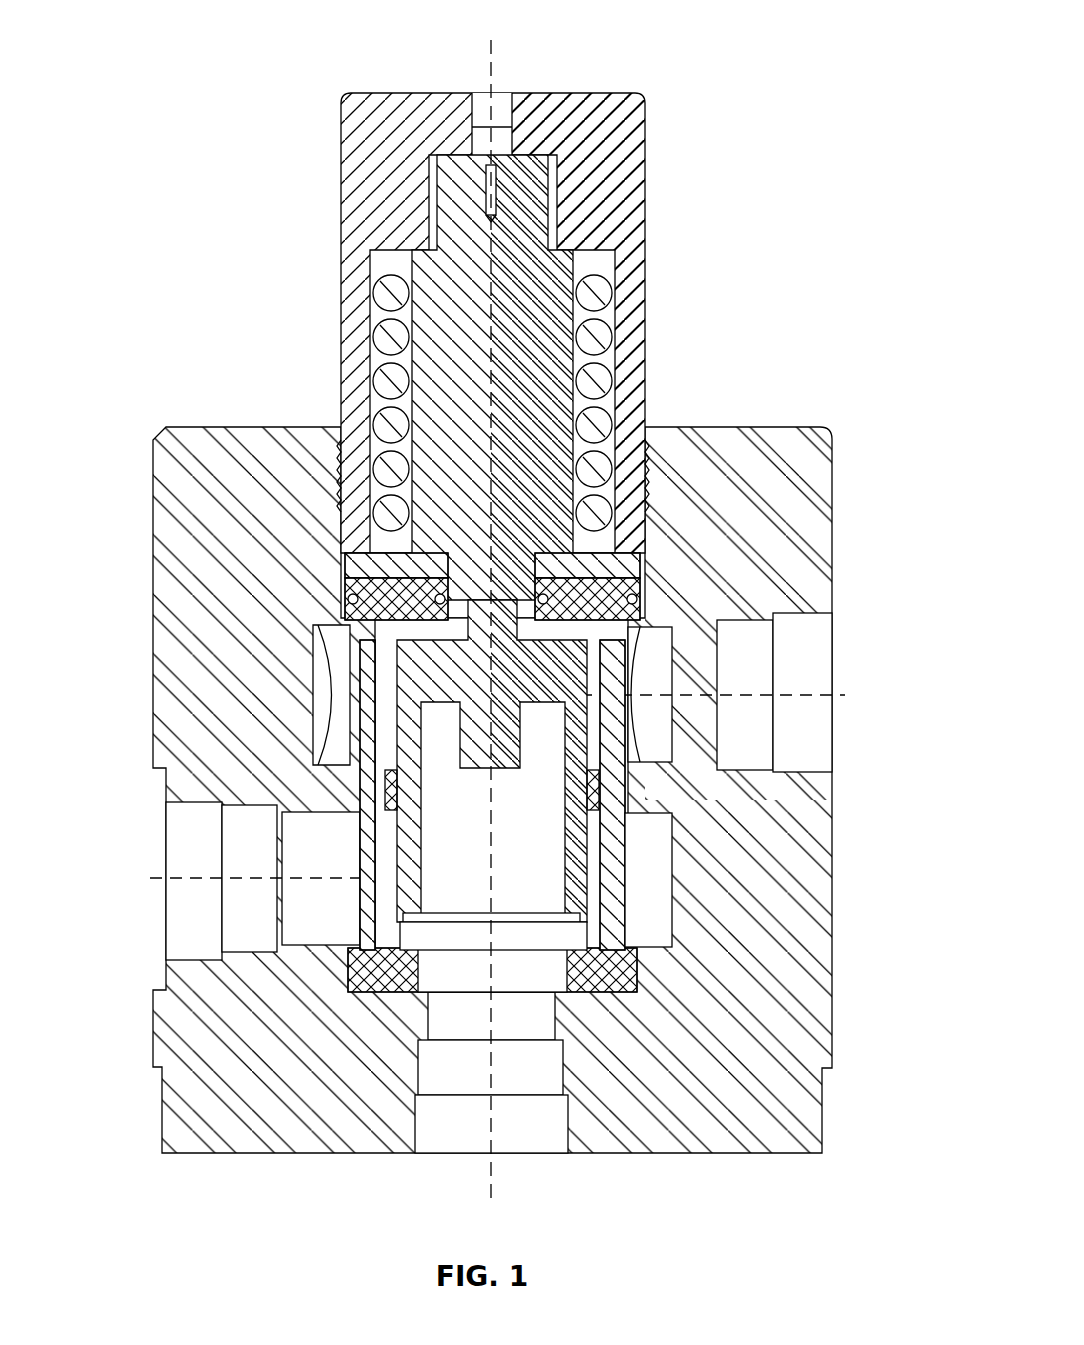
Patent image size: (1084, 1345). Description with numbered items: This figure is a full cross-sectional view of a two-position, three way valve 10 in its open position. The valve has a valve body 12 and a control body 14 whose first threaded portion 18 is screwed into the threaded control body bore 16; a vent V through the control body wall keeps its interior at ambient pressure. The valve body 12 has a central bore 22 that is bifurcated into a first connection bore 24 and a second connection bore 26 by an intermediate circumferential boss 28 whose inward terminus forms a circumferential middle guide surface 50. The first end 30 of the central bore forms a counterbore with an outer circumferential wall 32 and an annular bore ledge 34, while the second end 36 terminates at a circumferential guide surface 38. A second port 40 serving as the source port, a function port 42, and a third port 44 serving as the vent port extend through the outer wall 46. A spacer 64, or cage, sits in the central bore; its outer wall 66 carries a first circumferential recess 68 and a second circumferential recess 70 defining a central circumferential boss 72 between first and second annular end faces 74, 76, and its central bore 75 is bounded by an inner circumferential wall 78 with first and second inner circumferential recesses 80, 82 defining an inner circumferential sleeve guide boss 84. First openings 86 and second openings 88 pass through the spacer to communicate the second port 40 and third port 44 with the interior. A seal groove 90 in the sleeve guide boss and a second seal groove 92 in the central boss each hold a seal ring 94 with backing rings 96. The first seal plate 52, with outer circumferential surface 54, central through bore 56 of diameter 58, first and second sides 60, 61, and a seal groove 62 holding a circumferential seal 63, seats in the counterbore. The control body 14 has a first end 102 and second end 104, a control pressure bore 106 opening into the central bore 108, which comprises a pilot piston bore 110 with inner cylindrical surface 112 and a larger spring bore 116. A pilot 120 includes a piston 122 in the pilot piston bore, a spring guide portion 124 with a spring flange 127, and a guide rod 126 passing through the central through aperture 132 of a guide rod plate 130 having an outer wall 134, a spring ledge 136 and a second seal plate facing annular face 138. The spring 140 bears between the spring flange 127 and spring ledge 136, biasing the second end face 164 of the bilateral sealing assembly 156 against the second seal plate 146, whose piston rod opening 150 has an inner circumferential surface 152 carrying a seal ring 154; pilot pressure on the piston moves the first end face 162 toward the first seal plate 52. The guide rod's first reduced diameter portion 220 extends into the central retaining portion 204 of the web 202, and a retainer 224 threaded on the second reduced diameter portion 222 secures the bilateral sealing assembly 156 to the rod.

The two-position, three way valve 10 is at (690, 45).
The valve body 12 is at (772, 432).
The control body 14 is at (346, 100).
The control body bore 16 is at (640, 530).
The first threaded portion 18 is at (688, 436).
The central bore 22 is at (418, 915).
The first connection bore 24 is at (592, 1000).
The second connection bore 26 is at (662, 627).
The intermediate circumferential boss 28 is at (230, 830).
The first end of the central bore 30 is at (362, 995).
The outer circumferential wall 32 is at (700, 992).
The annular bore ledge 34 is at (428, 1040).
The second end of the central bore 36 is at (346, 560).
The circumferential guide surface 38 is at (338, 630).
The second port 40 is at (181, 938).
The function port 42 is at (506, 1133).
The third port 44 is at (781, 726).
The outer wall of the valve body 46 is at (834, 975).
The circumferential middle guide surface 50 is at (834, 700).
The first seal plate 52 is at (382, 1000).
The outer circumferential surface 54 is at (355, 985).
The central through bore 56 is at (438, 1000).
The diameter 58 is at (565, 970).
The first side 60 is at (572, 995).
The second side 61 is at (580, 945).
The seal groove 62 is at (632, 930).
The circumferential seal 63 is at (640, 962).
The spacer 64 is at (468, 600).
The outer wall 66 is at (340, 865).
The first circumferential recess 68 is at (345, 930).
The second circumferential recess 70 is at (325, 690).
The central circumferential boss 72 is at (200, 797).
The first annular end face 74 is at (358, 1000).
The central bore 75 is at (760, 905).
The second annular end face 76 is at (632, 450).
The inner circumferential wall 78 is at (712, 796).
The first inner circumferential recess 80 is at (742, 860).
The second inner circumferential recess 82 is at (760, 690).
The inner circumferential sleeve guide boss 84 is at (692, 775).
The first openings 86 is at (722, 822).
The second openings 88 is at (362, 790).
The seal groove 90 is at (650, 745).
The second seal groove 92 is at (376, 835).
The seal ring 94 is at (398, 790).
The backing rings 96 is at (730, 733).
The first end 102 is at (343, 470).
The second end 104 is at (380, 93).
The control pressure bore 106 is at (478, 93).
The central bore 108 is at (556, 160).
The pilot piston bore 110 is at (520, 93).
The inner cylindrical surface 112 is at (432, 215).
The spring bore 116 is at (622, 372).
The pilot 120 is at (420, 610).
The piston 122 is at (455, 160).
The spring guide portion 124 is at (373, 272).
The guide rod 126 is at (352, 770).
The spring flange 127 is at (616, 300).
The guide rod plate 130 is at (640, 560).
The central through aperture 132 is at (450, 505).
The outer wall 134 is at (640, 590).
The spring ledge 136 is at (362, 420).
The second seal plate facing annular face 138 is at (600, 600).
The spring 140 is at (373, 322).
The second seal plate 146 is at (348, 590).
The piston rod opening 150 is at (440, 565).
The inner circumferential surface 152 is at (620, 616).
The seal ring 154 is at (612, 600).
The bilateral sealing assembly 156 is at (410, 850).
The first end face 162 is at (372, 1010).
The second end face 164 is at (578, 578).
The web 202 is at (445, 720).
The central retaining portion 204 is at (700, 662).
The first reduced diameter portion 220 is at (470, 643).
The second reduced diameter portion 222 is at (510, 720).
The retainer 224 is at (495, 770).
The vent V is at (697, 290).